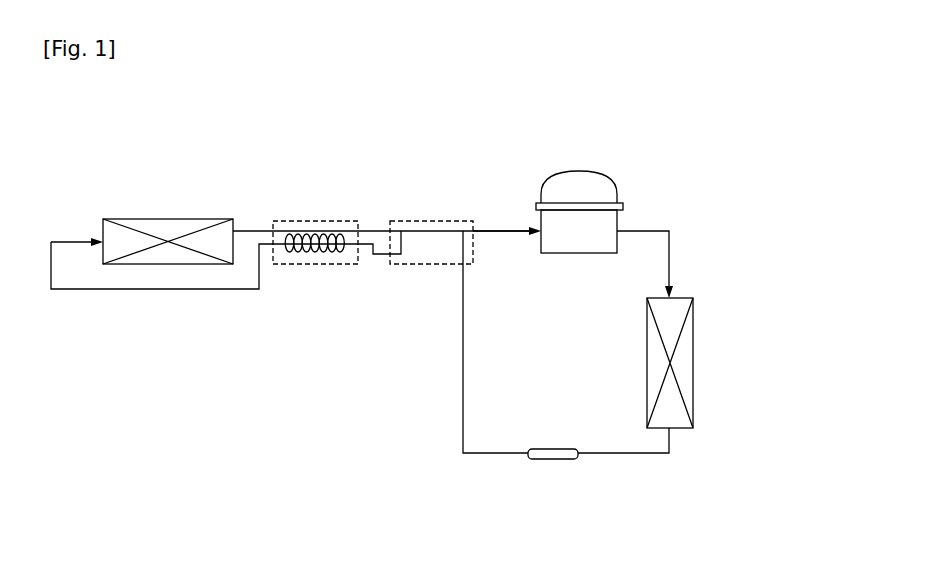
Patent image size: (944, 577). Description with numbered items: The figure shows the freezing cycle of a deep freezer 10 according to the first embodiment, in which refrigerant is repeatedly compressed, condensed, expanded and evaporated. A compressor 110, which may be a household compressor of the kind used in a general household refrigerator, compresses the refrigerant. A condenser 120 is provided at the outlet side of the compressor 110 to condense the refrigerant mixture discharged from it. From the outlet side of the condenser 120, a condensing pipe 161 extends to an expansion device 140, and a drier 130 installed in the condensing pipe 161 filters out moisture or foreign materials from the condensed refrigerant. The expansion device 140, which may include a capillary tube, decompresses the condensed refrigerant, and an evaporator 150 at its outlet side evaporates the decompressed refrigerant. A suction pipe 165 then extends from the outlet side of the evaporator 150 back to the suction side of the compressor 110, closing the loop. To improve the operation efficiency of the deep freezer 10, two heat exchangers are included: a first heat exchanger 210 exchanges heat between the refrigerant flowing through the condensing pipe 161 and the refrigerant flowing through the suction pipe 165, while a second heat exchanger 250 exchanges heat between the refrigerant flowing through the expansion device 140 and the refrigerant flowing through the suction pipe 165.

The deep freezer 10 is at (415, 136).
The compressor 110 is at (608, 184).
The condenser 120 is at (693, 366).
The drier 130 is at (553, 460).
The expansion device 140 is at (313, 255).
The evaporator 150 is at (168, 219).
The condensing pipe 161 is at (463, 376).
The suction pipe 165 is at (507, 228).
The first heat exchanger 210 is at (437, 221).
The second heat exchanger 250 is at (315, 221).